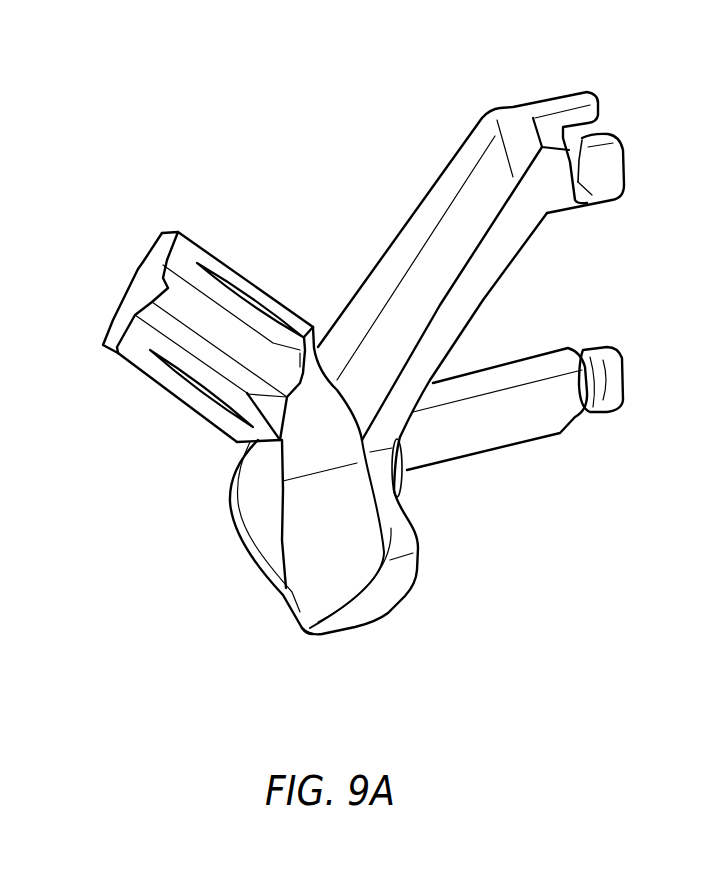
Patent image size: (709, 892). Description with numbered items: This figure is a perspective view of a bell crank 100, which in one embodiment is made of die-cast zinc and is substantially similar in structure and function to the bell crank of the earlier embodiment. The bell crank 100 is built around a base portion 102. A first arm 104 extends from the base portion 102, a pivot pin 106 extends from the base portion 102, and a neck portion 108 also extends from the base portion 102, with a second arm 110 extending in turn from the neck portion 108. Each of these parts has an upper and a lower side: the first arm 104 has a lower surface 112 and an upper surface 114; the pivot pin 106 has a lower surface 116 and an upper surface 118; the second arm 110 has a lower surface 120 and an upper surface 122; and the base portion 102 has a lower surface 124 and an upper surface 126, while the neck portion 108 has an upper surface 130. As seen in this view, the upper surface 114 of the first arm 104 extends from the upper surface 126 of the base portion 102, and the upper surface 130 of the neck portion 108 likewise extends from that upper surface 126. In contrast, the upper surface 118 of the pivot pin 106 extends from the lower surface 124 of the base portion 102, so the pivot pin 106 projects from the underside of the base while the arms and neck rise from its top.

The bell crank 100 is at (148, 115).
The base portion 102 is at (212, 485).
The first arm 104 is at (408, 145).
The pivot pin 106 is at (524, 494).
The neck portion 108 is at (266, 626).
The second arm 110 is at (117, 237).
The lower surface of the first arm 112 is at (508, 266).
The upper surface of the first arm 114 is at (413, 243).
The lower surface of the pivot pin 116 is at (535, 443).
The upper surface of the pivot pin 118 is at (522, 403).
The lower surface of the second arm 120 is at (145, 380).
The upper surface of the second arm 122 is at (172, 297).
The lower surface of the base portion 124 is at (405, 472).
The upper surface of the base portion 126 is at (267, 522).
The upper surface of the neck portion 130 is at (340, 493).